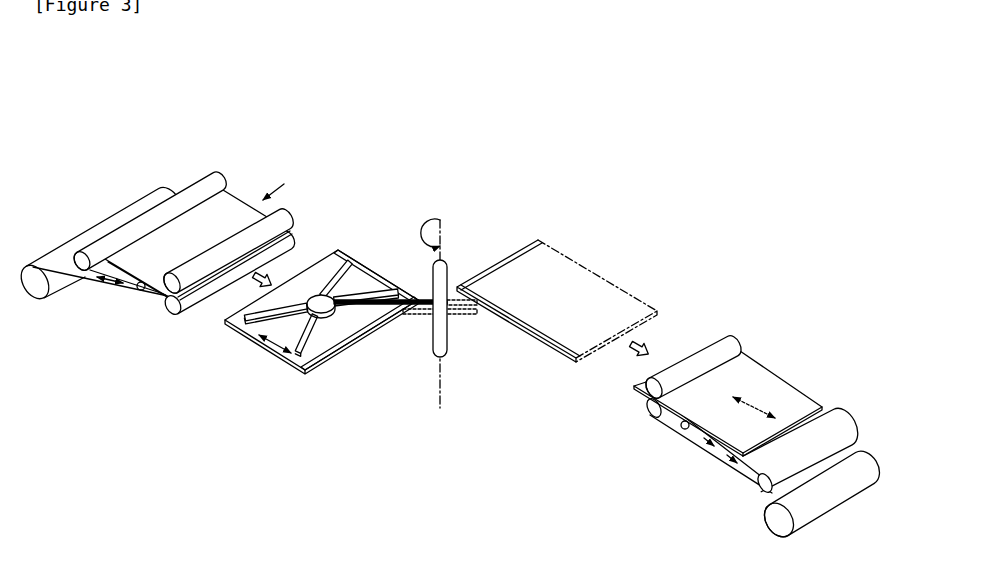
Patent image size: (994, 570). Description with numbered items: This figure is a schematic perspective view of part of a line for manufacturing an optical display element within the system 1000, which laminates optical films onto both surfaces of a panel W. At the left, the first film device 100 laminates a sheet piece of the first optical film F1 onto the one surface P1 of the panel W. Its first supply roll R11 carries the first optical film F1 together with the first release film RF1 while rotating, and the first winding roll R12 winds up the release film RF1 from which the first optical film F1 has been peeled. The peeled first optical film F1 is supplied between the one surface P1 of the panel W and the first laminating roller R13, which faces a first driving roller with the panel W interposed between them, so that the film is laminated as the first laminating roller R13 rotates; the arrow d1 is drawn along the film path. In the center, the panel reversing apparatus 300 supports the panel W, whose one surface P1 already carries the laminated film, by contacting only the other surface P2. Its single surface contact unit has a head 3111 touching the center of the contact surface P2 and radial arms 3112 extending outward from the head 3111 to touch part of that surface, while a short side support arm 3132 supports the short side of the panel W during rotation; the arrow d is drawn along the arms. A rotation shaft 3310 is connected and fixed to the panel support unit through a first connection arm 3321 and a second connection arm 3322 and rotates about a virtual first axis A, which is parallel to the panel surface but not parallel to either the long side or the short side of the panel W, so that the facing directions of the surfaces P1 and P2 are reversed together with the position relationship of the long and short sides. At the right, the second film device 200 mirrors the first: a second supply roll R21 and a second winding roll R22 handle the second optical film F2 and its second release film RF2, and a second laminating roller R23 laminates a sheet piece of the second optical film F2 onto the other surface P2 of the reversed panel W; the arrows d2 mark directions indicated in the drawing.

The system for manufacturing the optical display element 1000 is at (121, 93).
The first film device 100 is at (378, 285).
The first supply roll R11 is at (34, 294).
The first winding roll R12 is at (78, 257).
The first laminating roller R13 is at (290, 219).
The first release film RF1 is at (120, 242).
The first optical film F1 is at (124, 291).
The one surface of the panel P1 is at (157, 292).
The other surface of the panel P2 is at (236, 206).
The panel W is at (281, 188).
The first direction d1 is at (109, 287).
The panel reversing apparatus 300 is at (502, 328).
The head 3111 is at (317, 292).
The radial arms 3112 is at (312, 370).
The short side support arm 3132 is at (377, 268).
The first connection arm 3321 is at (417, 298).
The second connection arm 3322 is at (422, 321).
The rotation shaft 3310 is at (445, 264).
The virtual first axis A is at (440, 323).
The arm extension direction d is at (275, 341).
The second film device 200 is at (737, 449).
The second supply roll R21 is at (777, 531).
The second winding roll R22 is at (764, 486).
The second laminating roller R23 is at (647, 392).
The second release film RF2 is at (826, 430).
The second optical film F2 is at (700, 446).
The second direction d2 is at (736, 443).